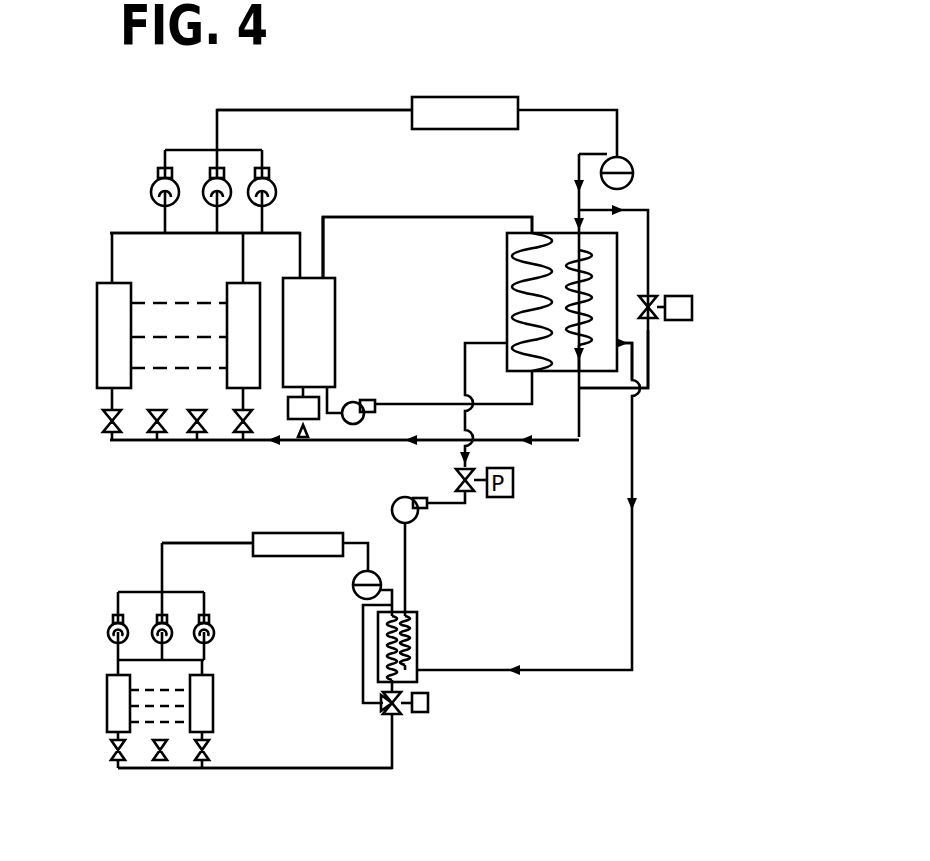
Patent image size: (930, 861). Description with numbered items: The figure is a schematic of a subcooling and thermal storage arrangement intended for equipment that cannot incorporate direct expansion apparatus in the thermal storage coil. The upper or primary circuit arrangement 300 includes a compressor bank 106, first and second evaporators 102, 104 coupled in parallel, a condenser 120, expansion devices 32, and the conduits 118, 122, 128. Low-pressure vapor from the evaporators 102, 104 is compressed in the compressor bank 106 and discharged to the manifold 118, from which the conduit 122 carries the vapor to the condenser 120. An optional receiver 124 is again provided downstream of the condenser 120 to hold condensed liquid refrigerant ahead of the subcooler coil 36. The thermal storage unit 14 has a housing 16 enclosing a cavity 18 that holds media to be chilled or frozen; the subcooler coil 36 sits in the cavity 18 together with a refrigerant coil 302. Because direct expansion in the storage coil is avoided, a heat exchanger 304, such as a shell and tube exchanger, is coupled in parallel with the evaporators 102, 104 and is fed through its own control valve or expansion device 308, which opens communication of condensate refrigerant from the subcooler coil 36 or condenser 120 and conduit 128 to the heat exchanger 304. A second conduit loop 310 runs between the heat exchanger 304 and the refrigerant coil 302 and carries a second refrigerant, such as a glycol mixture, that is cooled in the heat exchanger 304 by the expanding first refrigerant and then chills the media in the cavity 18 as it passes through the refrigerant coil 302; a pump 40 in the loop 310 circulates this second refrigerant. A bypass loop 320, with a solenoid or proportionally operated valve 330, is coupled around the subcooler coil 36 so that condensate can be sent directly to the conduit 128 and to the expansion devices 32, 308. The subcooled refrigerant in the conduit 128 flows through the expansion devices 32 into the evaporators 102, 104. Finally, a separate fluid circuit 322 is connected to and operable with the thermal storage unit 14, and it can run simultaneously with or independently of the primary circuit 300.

The primary circuit arrangement 300 is at (147, 118).
The conduit 122 is at (318, 110).
The condenser 120 is at (493, 97).
The receiver 124 is at (632, 153).
The compressor bank 106 is at (145, 180).
The manifold 118 is at (125, 233).
The second conduit loop 310 is at (367, 217).
The heat exchanger 304 is at (338, 292).
The control valve/expansion device 308 is at (288, 430).
The pump 40 is at (350, 400).
The thermal storage unit 14 is at (626, 261).
The refrigerant coil 302 is at (517, 283).
The subcooler coil 36 is at (587, 280).
The fluid circuit 322 is at (657, 296).
The housing 16 is at (640, 333).
The bypass loop 320 is at (648, 370).
The cavity 18 is at (563, 353).
The first evaporator 102 is at (97, 352).
The second evaporator 104 is at (225, 375).
The expansion devices 32 is at (155, 422).
The conduit 128 is at (215, 440).
The solenoid or proportionally operated valve 330 is at (100, 612).